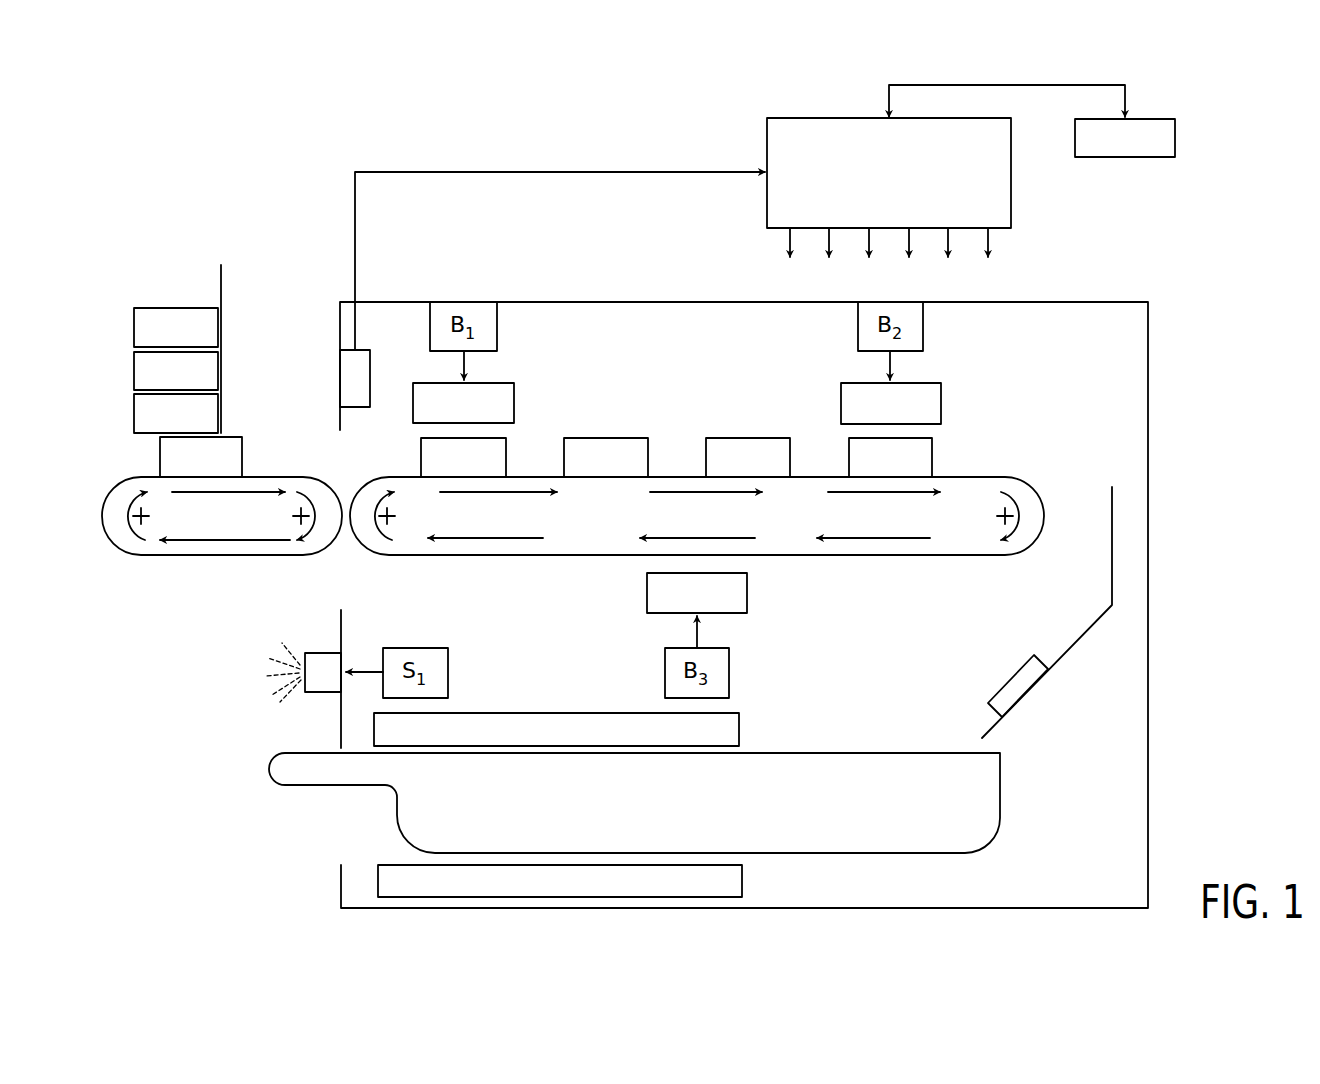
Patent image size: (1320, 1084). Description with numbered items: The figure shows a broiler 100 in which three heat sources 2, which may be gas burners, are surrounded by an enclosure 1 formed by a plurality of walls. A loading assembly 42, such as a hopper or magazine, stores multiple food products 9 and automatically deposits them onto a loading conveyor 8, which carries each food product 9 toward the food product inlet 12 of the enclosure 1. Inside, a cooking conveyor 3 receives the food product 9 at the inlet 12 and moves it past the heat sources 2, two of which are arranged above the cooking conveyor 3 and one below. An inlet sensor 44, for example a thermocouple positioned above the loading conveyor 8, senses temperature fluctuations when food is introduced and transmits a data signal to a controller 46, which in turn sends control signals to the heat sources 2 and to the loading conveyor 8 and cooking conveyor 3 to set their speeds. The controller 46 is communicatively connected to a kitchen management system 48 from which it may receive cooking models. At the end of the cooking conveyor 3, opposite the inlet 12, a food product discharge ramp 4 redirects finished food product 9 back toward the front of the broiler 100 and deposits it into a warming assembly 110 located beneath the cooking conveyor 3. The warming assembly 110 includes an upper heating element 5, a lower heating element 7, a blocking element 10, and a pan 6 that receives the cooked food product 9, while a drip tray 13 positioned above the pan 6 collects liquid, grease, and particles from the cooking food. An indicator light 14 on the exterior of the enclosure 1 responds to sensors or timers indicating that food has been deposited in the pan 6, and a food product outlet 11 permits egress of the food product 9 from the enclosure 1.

The broiler 100 is at (228, 178).
The enclosure 1 is at (543, 301).
The loading assembly 42 is at (220, 290).
The food product 9 is at (1070, 697).
The loading conveyor 8 is at (140, 556).
The cooking conveyor 3 is at (850, 556).
The food product inlet 12 is at (322, 448).
The inlet sensor 44 is at (371, 376).
The heat source 2 is at (514, 402).
The controller 46 is at (828, 118).
The kitchen management system 48 is at (1175, 138).
The indicator light 14 is at (305, 665).
The warming assembly 110 is at (322, 718).
The blocking element 10 is at (338, 731).
The upper heating element 5 is at (560, 735).
The pan 6 is at (990, 800).
The drip tray 13 is at (455, 753).
The food product outlet 11 is at (368, 852).
The lower heating element 7 is at (730, 882).
The food product discharge ramp 4 is at (995, 725).